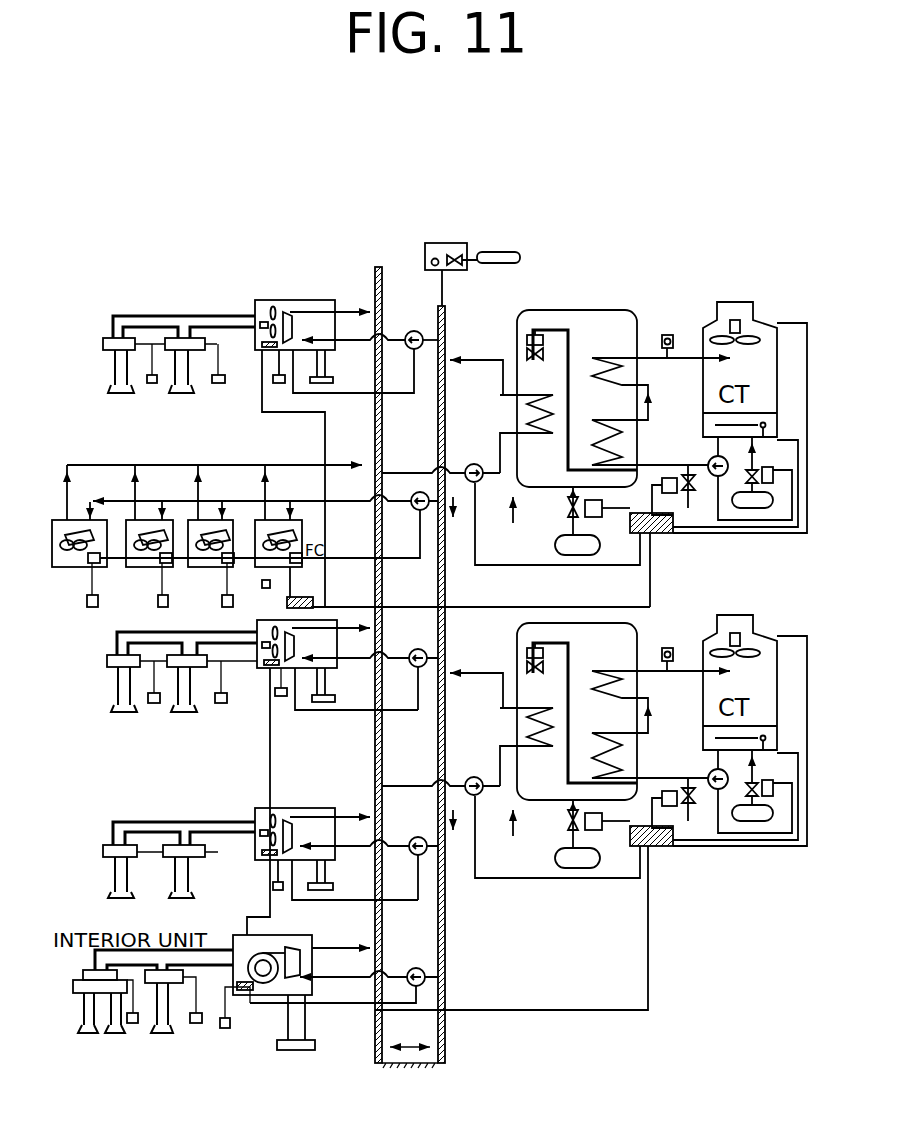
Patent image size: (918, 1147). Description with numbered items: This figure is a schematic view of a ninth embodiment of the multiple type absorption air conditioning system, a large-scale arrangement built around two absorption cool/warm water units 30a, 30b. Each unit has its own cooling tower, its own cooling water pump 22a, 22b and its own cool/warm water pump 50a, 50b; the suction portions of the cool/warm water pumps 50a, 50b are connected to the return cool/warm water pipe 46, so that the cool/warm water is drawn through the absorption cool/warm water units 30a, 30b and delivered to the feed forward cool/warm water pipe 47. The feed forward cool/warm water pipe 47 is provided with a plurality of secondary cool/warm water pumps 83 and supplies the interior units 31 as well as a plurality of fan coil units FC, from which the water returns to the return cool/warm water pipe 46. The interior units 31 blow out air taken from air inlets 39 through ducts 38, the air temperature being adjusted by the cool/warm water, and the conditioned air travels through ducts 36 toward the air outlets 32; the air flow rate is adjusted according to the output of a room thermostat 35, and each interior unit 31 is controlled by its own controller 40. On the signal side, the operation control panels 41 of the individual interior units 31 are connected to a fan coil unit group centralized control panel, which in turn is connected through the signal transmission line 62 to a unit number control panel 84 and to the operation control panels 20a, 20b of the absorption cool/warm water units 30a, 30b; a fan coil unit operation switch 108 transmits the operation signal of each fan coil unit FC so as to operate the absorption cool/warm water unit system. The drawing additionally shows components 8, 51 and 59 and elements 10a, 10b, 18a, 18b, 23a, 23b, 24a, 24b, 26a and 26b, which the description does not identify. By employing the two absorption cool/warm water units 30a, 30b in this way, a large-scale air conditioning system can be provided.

The building floor 8 is at (357, 387).
The heat source unit a 10a is at (568, 510).
The heat source unit b 10b is at (567, 834).
The valve a 18a is at (535, 335).
The valve b 18b is at (496, 644).
The operation control panel 20a is at (668, 535).
The operation control panel 20b is at (591, 859).
The cooling water pump 22a is at (708, 462).
The cooling water pump 22b is at (716, 786).
The valve a 23a is at (692, 495).
The valve b 23b is at (698, 836).
The temperature sensor a 24a is at (667, 335).
The temperature sensor b 24b is at (718, 627).
The valve a 26a is at (773, 475).
The valve b 26b is at (796, 785).
The absorption cool/warm water unit 30a is at (598, 310).
The absorption cool/warm water unit 30b is at (610, 709).
The interior unit 31 is at (290, 300).
The air outlet 32 is at (118, 393).
The room thermostat 35 is at (133, 1023).
The duct 36 is at (168, 316).
The duct 38 is at (305, 1020).
The air inlet 39 is at (296, 1050).
The controller 40 is at (154, 703).
The operation control panel 41 is at (152, 383).
The return cool/warm water pipe 46 is at (379, 267).
The feed forward cool/warm water pipe 47 is at (445, 308).
The cool/warm water pump 50a is at (474, 464).
The cool/warm water pump 50b is at (467, 734).
The expansion tank 51 is at (443, 243).
The ground 59 is at (404, 1063).
The signal transmission line 62 is at (470, 607).
The secondary cool/warm water pump 83 is at (414, 331).
The unit number control panel 84 is at (287, 603).
The fan coil unit operation switch 108 is at (330, 580).